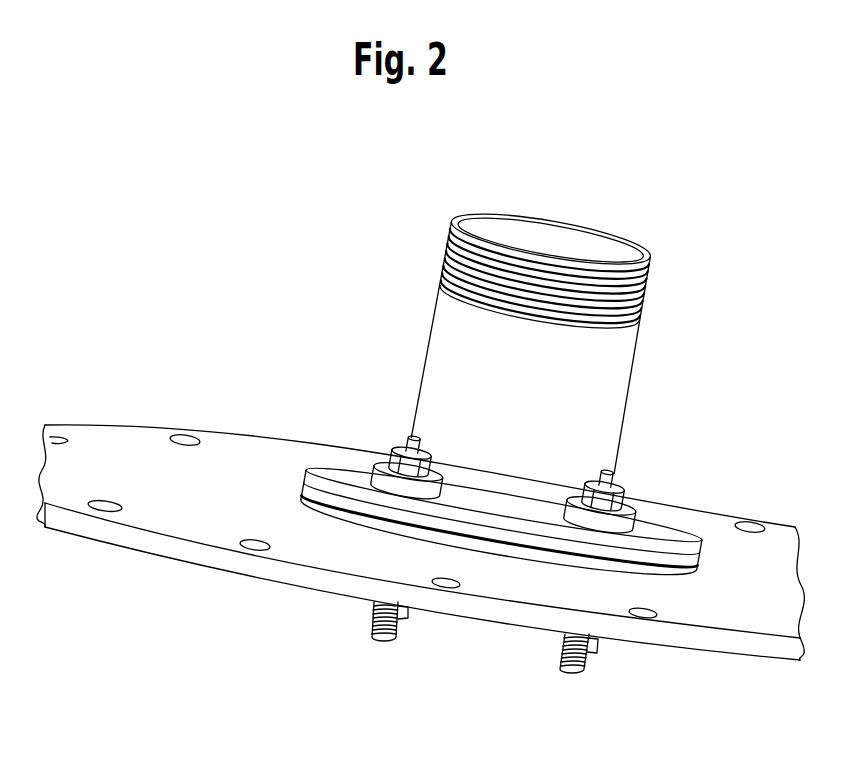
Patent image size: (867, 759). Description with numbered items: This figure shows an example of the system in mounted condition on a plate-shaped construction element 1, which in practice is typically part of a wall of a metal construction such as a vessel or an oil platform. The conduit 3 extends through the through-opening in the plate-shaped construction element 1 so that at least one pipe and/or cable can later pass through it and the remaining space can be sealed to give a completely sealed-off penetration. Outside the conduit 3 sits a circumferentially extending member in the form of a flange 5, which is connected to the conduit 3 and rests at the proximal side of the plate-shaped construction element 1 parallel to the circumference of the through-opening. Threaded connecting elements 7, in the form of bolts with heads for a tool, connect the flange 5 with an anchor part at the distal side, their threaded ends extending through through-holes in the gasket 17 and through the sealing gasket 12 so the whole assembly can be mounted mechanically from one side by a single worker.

The plate-shaped construction element 1 is at (193, 552).
The conduit 3 is at (613, 362).
The flange 5 is at (653, 530).
The connecting element 7 is at (383, 452).
The sealing gasket 12 is at (663, 568).
The gasket 17 is at (390, 503).